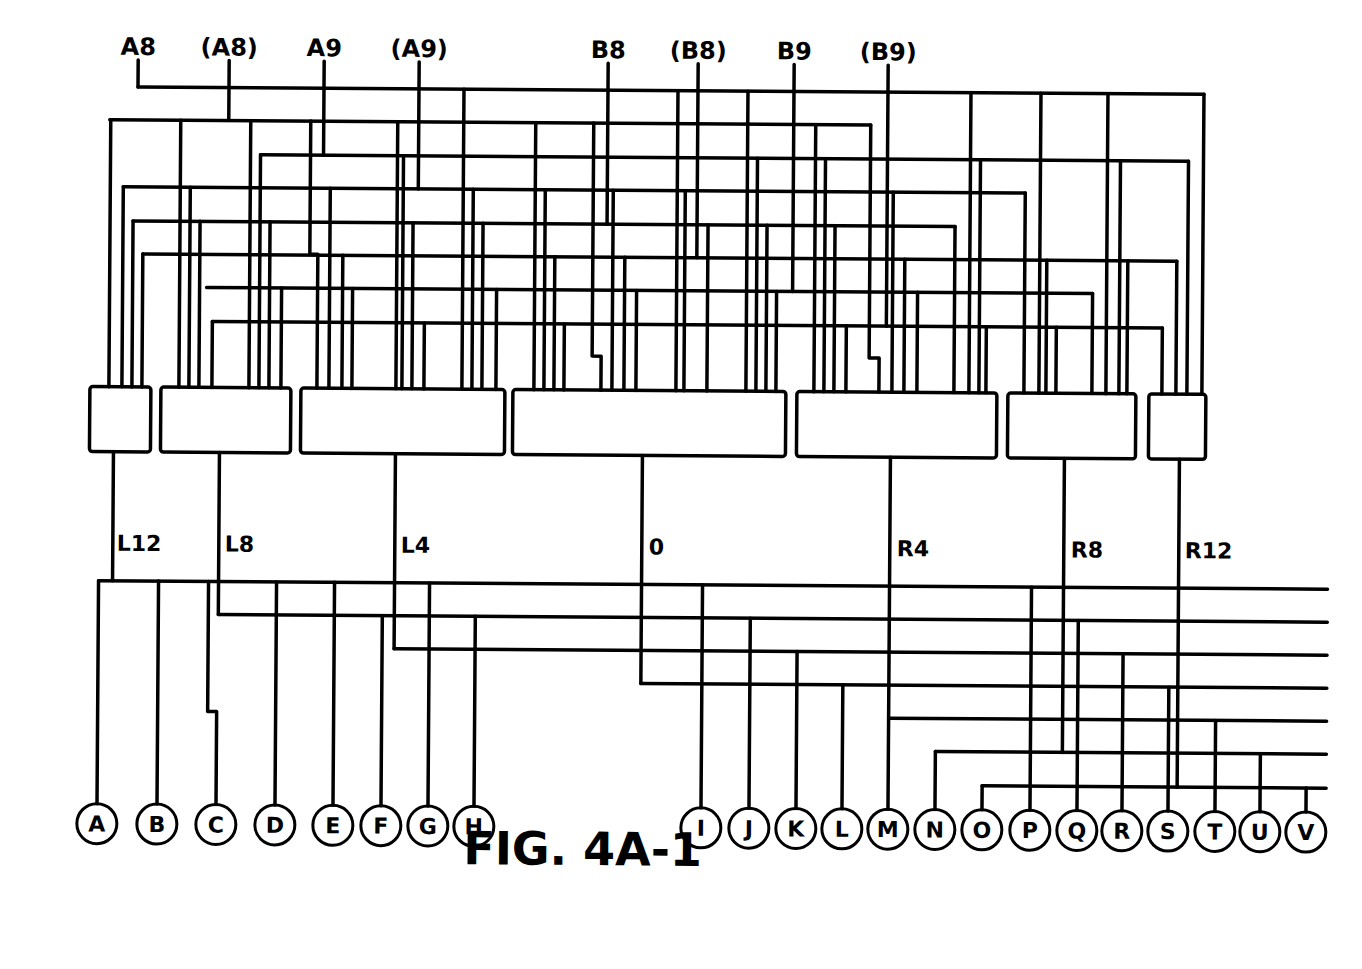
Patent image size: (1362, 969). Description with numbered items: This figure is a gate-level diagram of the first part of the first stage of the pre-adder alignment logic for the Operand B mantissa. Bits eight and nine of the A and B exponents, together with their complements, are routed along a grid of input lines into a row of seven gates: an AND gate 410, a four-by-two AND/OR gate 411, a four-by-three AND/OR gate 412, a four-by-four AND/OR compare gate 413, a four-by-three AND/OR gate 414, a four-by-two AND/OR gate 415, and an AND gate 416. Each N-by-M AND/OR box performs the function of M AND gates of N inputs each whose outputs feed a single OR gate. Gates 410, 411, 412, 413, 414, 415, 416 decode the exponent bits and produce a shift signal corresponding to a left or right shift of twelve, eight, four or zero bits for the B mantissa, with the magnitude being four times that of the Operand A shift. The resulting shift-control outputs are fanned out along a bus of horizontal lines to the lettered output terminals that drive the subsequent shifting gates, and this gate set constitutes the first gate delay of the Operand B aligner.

The AND gate 410 is at (128, 452).
The 4x2 AND/OR gate 411 is at (265, 452).
The 4x3 AND/OR gate 412 is at (468, 452).
The 4x4 AND/OR (compare) gate 413 is at (744, 452).
The 4x3 AND/OR gate 414 is at (957, 452).
The 4x2 AND/OR gate 415 is at (1102, 452).
The AND gate 416 is at (1208, 422).